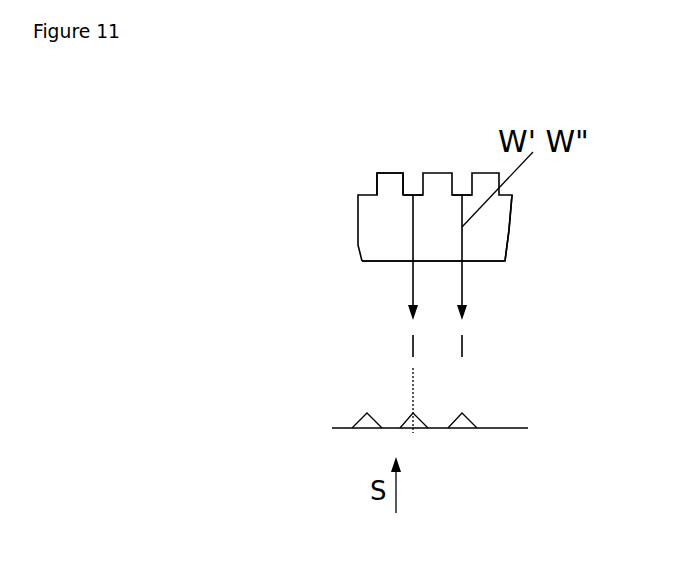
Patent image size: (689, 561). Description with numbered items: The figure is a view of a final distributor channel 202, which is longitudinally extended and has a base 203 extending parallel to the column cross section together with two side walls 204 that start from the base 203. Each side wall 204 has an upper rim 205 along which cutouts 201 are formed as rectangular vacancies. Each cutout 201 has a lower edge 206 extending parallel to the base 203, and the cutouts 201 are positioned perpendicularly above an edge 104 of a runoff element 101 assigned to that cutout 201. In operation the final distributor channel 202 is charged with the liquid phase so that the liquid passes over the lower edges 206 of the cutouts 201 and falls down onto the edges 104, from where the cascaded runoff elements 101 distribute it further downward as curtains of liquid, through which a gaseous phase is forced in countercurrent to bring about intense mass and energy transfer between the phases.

The final distributor channel 202 is at (343, 196).
The upper rim 205 is at (388, 172).
The cutout 201 is at (463, 186).
The lower edge 206 is at (460, 196).
The base 203 is at (398, 262).
The side wall 204 is at (477, 245).
The edge 104 is at (413, 413).
The runoff element 101 is at (372, 430).